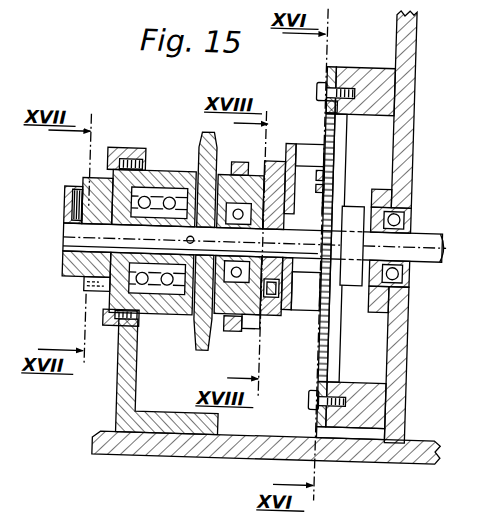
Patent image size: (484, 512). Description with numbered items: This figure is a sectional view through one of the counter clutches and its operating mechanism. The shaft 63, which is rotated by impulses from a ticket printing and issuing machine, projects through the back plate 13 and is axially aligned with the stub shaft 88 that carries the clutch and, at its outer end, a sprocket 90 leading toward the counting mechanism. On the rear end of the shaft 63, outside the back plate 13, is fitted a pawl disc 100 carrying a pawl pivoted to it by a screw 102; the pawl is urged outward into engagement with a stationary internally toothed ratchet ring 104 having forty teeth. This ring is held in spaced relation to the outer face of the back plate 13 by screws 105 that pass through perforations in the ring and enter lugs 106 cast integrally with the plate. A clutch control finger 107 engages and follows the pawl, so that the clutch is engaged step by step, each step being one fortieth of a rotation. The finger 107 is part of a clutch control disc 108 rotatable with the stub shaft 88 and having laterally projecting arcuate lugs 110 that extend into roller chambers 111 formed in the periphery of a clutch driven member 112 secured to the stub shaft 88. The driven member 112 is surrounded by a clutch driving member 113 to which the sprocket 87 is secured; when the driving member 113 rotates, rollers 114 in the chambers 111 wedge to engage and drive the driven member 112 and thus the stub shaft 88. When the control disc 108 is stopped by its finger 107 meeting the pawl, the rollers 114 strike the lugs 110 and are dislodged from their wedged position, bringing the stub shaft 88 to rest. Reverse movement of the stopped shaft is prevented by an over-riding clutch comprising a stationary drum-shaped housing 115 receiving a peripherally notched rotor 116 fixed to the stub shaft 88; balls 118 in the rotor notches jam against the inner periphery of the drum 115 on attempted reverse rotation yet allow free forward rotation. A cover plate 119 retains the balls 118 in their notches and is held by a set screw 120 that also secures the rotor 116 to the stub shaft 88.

The back plate 13 is at (411, 40).
The shaft 63 is at (430, 232).
The sprocket 87 is at (230, 324).
The stub shaft 88 is at (80, 241).
The sprocket 90 is at (202, 136).
The pawl disc 100 is at (337, 342).
The screw 102 is at (320, 172).
The ratchet ring 104 is at (320, 106).
The screws 105 is at (316, 84).
The lugs 106 is at (366, 76).
The clutch control finger 107 is at (300, 150).
The clutch control disc 108 is at (268, 162).
The arcuate lugs 110 is at (278, 180).
The roller chambers 111 is at (270, 318).
The clutch driven member 112 is at (291, 285).
The clutch driving member 113 is at (248, 334).
The rollers 114 is at (290, 311).
The drum-shaped housing 115 is at (104, 184).
The notched rotor 116 is at (95, 273).
The balls 118 is at (90, 294).
The cover plate 119 is at (69, 204).
The set screw 120 is at (82, 194).